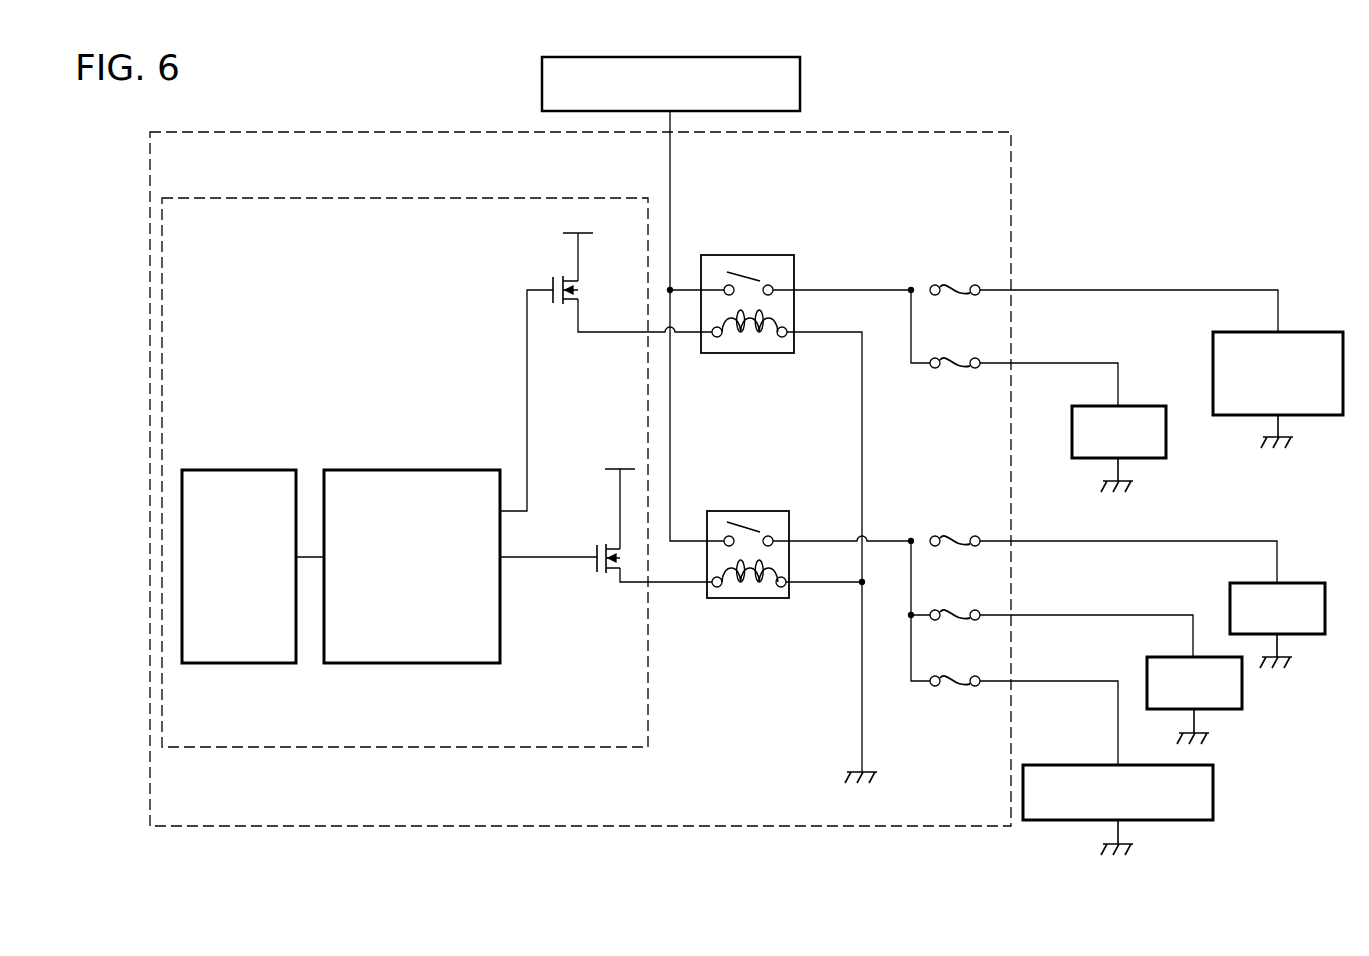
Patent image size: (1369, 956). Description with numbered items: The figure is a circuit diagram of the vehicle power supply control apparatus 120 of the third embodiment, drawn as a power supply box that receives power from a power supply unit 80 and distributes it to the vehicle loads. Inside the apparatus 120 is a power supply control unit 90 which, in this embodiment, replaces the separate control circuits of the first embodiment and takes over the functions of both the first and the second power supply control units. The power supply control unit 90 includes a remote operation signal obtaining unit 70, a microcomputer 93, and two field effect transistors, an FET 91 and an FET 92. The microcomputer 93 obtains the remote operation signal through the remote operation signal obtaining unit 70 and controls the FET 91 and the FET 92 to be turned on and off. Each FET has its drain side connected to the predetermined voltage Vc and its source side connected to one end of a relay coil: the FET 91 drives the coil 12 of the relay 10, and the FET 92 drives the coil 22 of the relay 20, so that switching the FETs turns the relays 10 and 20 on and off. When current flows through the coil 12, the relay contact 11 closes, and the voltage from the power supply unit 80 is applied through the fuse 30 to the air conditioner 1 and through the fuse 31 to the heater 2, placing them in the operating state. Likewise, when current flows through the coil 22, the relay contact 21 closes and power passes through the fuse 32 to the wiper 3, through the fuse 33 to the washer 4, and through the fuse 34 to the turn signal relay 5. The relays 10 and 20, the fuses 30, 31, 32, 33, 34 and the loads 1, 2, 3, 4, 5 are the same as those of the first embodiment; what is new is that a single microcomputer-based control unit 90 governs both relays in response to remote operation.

The air conditioner 1 is at (1278, 390).
The heater 2 is at (1119, 449).
The wiper 3 is at (1277, 625).
The washer 4 is at (1194, 700).
The turn signal relay 5 is at (1118, 810).
The relay 10 is at (789, 306).
The relay contact 11 is at (760, 277).
The coil 12 is at (750, 340).
The relay 20 is at (771, 564).
The relay contact 21 is at (753, 529).
The coil 22 is at (752, 587).
The fuse 30 is at (960, 284).
The fuse 31 is at (960, 357).
The fuse 32 is at (960, 535).
The fuse 33 is at (960, 609).
The fuse 34 is at (960, 675).
The remote operation signal obtaining unit 70 is at (239, 566).
The power supply unit 80 is at (671, 84).
The power supply control unit 90 is at (405, 472).
The FET 91 is at (582, 289).
The FET 92 is at (604, 571).
The microcomputer 93 is at (412, 566).
The vehicle power supply control apparatus 120 is at (580, 479).